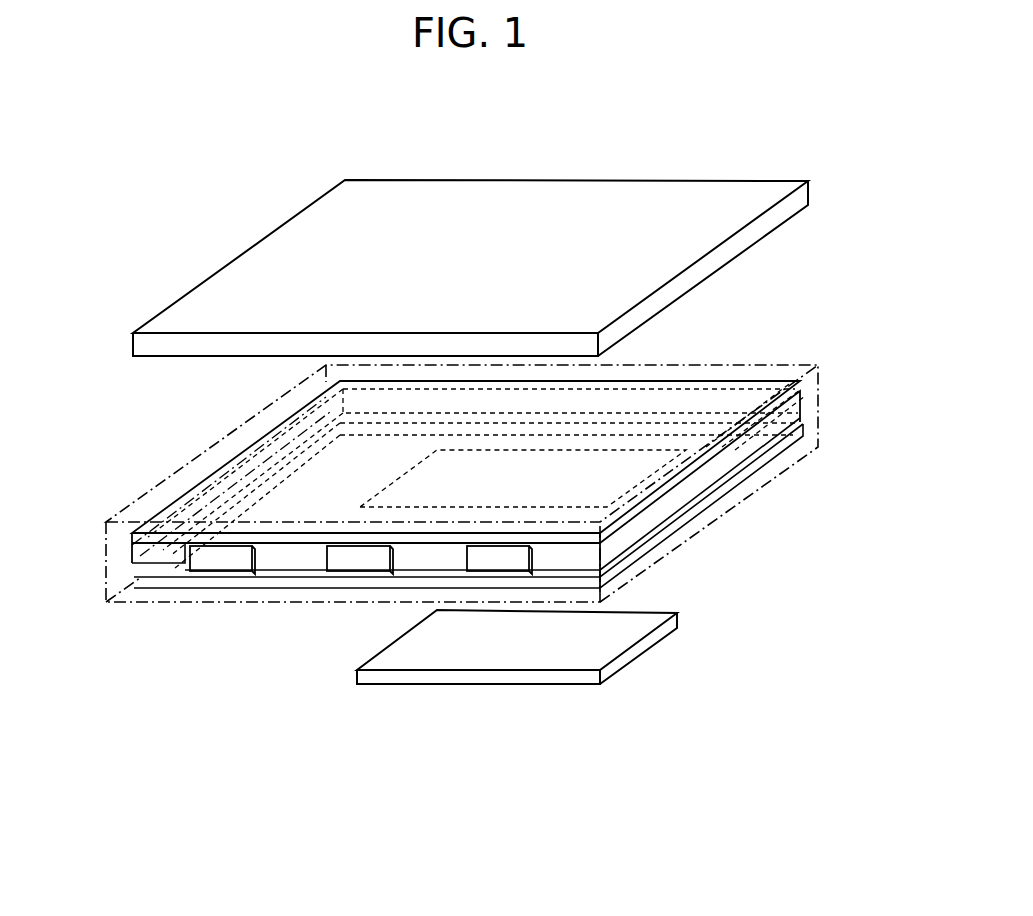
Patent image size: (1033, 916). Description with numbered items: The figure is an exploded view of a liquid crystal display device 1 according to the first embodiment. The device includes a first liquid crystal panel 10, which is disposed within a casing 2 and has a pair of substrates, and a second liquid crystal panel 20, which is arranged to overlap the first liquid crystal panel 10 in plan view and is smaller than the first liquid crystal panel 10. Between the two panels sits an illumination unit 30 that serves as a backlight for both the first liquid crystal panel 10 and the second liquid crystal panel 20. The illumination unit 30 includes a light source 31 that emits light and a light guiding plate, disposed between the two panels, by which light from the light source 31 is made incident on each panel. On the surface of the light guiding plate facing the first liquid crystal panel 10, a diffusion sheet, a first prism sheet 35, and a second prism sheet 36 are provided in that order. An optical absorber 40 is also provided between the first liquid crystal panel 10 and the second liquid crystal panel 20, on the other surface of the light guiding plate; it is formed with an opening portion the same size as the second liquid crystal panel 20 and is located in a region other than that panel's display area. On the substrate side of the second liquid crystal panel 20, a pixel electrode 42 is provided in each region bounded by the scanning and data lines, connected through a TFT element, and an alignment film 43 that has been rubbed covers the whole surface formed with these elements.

The liquid crystal display device 1 is at (240, 176).
The first liquid crystal panel 10 is at (728, 160).
The casing 2 is at (823, 390).
The second liquid crystal panel 20 is at (602, 698).
The illumination unit 30 is at (119, 536).
The light source 31 is at (228, 563).
The first prism sheet 35 is at (186, 490).
The second prism sheet 36 is at (235, 484).
The optical absorber 40 is at (180, 587).
The pixel electrode 42 is at (137, 574).
The alignment film 43 is at (468, 506).